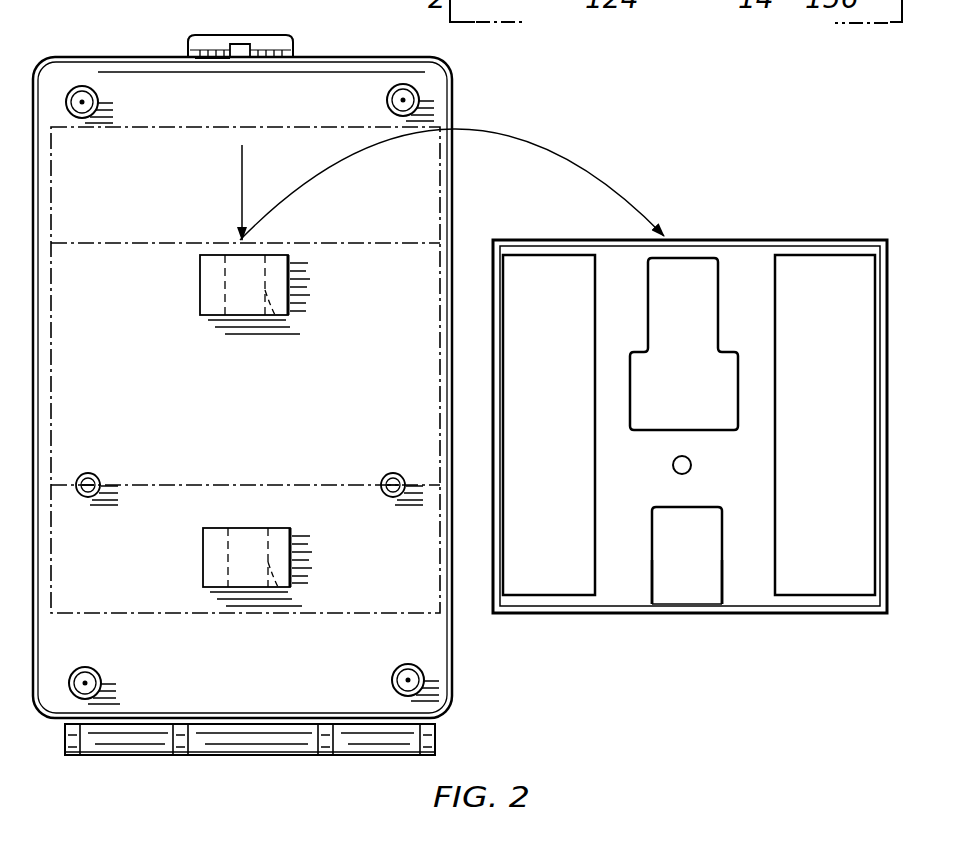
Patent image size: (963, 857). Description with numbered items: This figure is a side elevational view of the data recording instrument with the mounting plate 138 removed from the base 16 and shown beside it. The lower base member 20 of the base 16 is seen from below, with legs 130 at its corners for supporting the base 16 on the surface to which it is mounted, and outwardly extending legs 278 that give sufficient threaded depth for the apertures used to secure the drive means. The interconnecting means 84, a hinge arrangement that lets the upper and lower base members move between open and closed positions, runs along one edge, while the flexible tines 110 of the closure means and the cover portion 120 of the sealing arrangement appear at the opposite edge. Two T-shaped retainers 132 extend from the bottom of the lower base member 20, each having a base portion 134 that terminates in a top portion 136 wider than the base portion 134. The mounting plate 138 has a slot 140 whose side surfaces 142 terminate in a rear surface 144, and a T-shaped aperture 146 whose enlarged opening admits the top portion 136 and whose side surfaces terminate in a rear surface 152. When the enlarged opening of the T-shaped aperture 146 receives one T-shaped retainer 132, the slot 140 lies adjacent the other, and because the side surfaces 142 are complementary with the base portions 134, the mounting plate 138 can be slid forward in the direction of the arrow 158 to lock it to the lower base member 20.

The housing or base 16 is at (458, 216).
The lower base member 20 is at (452, 716).
The interconnecting means 84 is at (246, 760).
The flexible tines 110 is at (188, 52).
The cover portion 120 is at (262, 24).
The legs 130 is at (100, 100).
The T-shaped retainers 132 is at (200, 291).
The base portion 134 is at (295, 324).
The top portion 136 is at (291, 262).
The mounting plate 138 is at (430, 104).
The slot 140 is at (660, 592).
The side surfaces 142 is at (722, 563).
The rear surface 144 is at (683, 508).
The T-shaped aperture 146 is at (686, 262).
The rear surface 152 is at (683, 263).
The arrow 158 is at (238, 188).
The outwardly extending legs 278 is at (92, 473).